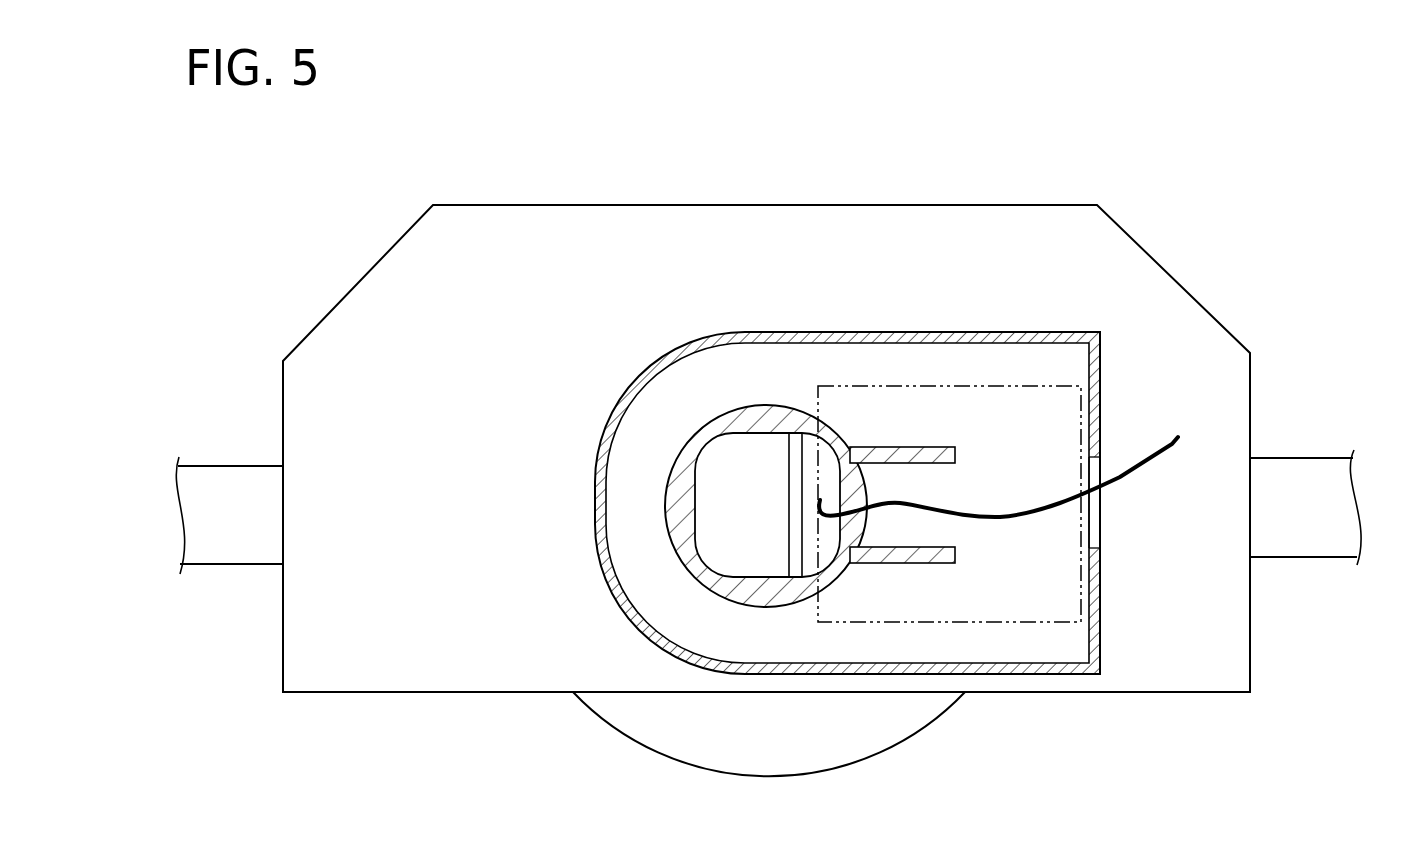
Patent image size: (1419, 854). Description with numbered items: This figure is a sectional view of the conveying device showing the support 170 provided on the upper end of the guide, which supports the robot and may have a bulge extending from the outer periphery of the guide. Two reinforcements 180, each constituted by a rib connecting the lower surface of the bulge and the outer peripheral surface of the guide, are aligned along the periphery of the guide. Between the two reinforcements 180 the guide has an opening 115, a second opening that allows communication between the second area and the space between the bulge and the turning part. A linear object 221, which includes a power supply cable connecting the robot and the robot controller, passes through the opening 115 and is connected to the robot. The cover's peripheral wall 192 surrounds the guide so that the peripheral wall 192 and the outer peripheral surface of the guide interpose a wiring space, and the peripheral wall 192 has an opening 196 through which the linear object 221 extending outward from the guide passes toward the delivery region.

The opening 115 is at (860, 535).
The support 170 is at (989, 386).
The reinforcement 180 is at (901, 447).
The peripheral wall 192 is at (1098, 643).
The opening 196 is at (1100, 530).
The linear object 221 is at (1143, 456).